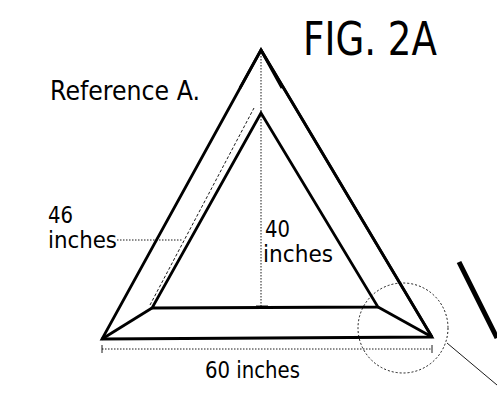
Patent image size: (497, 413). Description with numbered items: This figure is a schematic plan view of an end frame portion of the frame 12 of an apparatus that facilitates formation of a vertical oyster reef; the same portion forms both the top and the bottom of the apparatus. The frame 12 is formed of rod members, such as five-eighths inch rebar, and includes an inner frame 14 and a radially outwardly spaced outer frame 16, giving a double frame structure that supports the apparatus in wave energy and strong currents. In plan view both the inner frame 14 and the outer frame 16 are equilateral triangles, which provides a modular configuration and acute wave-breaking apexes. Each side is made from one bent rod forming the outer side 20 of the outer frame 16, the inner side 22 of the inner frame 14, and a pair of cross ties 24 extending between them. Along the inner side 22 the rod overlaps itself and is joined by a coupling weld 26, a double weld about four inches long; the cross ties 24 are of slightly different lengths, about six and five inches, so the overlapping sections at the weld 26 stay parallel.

The frame 12 is at (352, 139).
The inner frame 14 is at (322, 286).
The outer frame 16 is at (404, 253).
The outer side 20 is at (308, 116).
The inner side 22 is at (288, 158).
The cross ties 24 is at (263, 80).
The coupling weld 26 is at (212, 210).